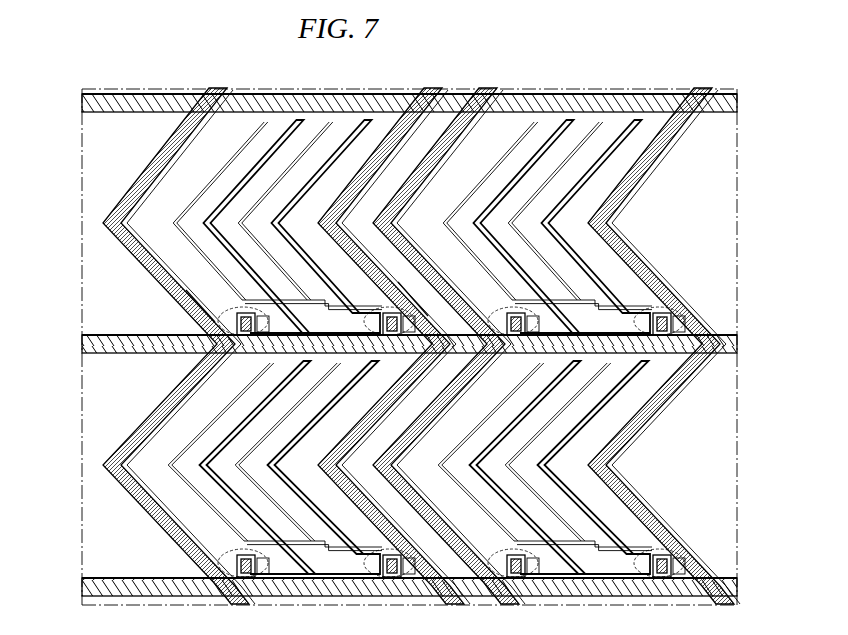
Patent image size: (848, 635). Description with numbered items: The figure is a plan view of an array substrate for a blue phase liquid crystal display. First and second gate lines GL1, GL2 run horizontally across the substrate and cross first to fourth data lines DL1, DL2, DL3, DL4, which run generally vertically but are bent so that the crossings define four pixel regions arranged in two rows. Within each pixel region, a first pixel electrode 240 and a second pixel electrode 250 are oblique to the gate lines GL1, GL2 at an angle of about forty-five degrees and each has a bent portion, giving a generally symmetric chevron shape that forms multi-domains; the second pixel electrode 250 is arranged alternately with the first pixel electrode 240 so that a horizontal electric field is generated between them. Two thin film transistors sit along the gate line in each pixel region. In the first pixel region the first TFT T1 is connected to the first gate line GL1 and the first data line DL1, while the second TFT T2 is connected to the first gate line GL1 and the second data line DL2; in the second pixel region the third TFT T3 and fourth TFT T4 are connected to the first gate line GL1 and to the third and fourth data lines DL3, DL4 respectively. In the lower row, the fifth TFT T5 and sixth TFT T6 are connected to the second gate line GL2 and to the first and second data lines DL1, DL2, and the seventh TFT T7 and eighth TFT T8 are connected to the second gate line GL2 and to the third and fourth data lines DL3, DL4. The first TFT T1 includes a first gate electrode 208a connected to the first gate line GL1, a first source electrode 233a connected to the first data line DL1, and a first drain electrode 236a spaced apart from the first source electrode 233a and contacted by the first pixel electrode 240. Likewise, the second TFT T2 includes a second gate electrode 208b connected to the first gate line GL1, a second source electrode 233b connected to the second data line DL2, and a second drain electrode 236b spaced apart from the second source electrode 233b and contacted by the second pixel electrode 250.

The first data line DL1 is at (228, 88).
The second data line DL2 is at (441, 88).
The third data line DL3 is at (496, 88).
The fourth data line DL4 is at (711, 88).
The first gate line GL1 is at (82, 345).
The second gate line GL2 is at (82, 586).
The second pixel electrode 250 is at (312, 128).
The first pixel electrode 240 is at (208, 186).
The first gate electrode 208a is at (204, 322).
The second gate electrode 208b is at (398, 316).
The first source electrode 233a is at (243, 311).
The second source electrode 233b is at (508, 322).
The first drain electrode 236a is at (270, 327).
The second drain electrode 236b is at (362, 312).
The first TFT T1 is at (247, 340).
The second TFT T2 is at (392, 340).
The third TFT T3 is at (516, 340).
The fourth TFT T4 is at (662, 340).
The fifth TFT T5 is at (238, 553).
The sixth TFT T6 is at (384, 553).
The seventh TFT T7 is at (508, 553).
The eighth TFT T8 is at (654, 553).